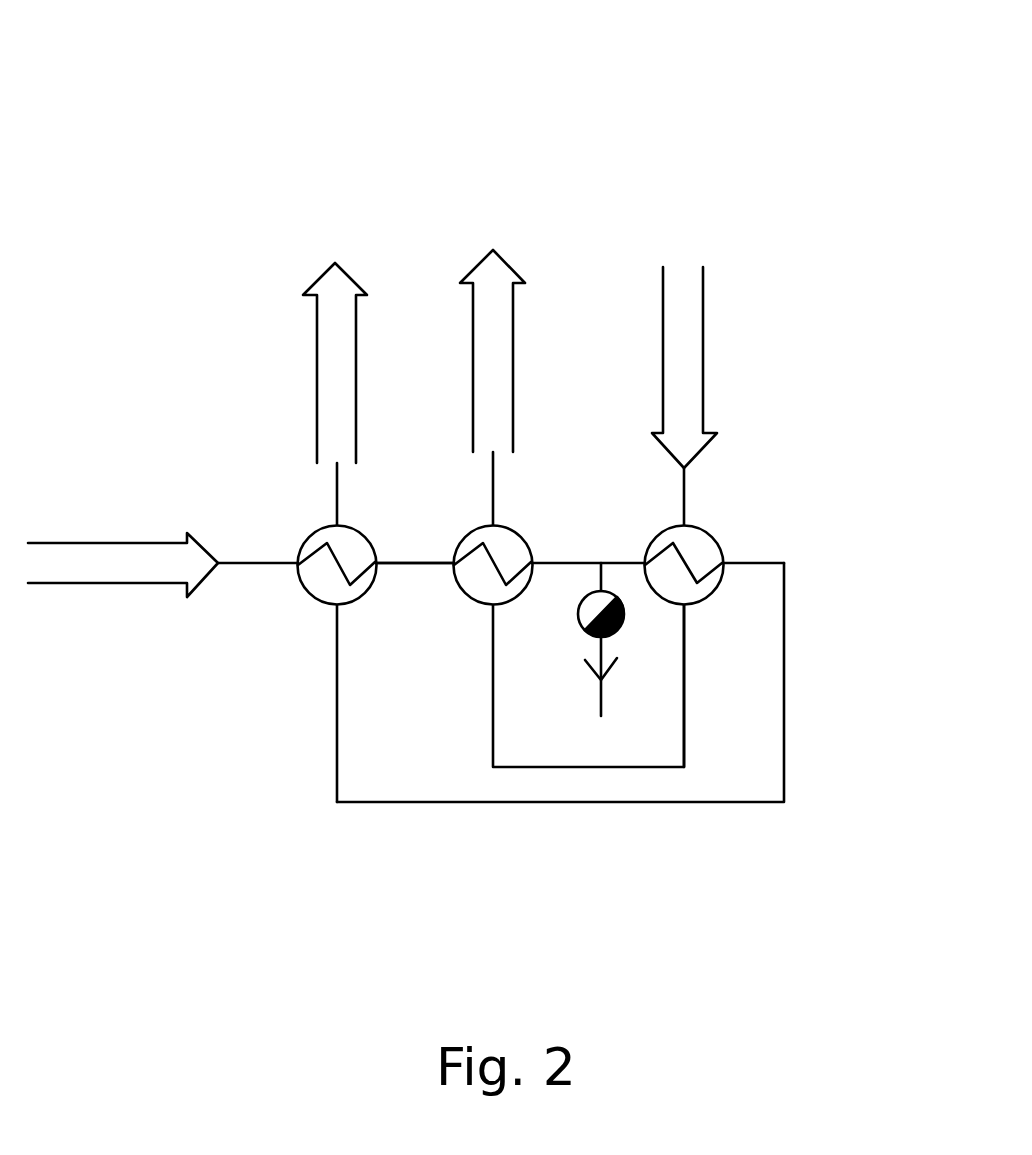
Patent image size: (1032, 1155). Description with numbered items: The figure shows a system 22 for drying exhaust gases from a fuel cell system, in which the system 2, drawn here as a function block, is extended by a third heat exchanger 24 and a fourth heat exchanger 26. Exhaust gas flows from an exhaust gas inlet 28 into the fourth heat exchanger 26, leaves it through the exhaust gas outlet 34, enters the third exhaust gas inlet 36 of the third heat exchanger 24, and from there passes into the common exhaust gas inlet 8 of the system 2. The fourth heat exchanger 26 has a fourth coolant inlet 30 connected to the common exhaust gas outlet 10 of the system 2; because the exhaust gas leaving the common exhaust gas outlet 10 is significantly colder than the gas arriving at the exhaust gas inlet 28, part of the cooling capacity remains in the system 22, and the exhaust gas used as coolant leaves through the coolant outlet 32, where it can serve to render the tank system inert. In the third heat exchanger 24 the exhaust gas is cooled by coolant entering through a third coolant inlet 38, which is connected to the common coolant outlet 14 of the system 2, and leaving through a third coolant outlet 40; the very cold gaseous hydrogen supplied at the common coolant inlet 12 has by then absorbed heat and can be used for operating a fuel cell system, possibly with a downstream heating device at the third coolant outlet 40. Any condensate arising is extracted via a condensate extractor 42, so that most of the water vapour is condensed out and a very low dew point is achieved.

The system 22 is at (572, 122).
The exhaust gas inlet 28 is at (247, 563).
The fourth heat exchanger 26 is at (318, 586).
The fourth coolant inlet 30 is at (337, 612).
The coolant outlet 32 is at (337, 507).
The exhaust gas outlet 34 is at (395, 562).
The third exhaust gas inlet 36 is at (432, 563).
The third coolant outlet 40 is at (495, 504).
The third heat exchanger 24 is at (480, 586).
The third coolant inlet 38 is at (493, 630).
The common exhaust gas inlet 8 is at (622, 563).
The condensate extractor 42 is at (615, 632).
The common coolant outlet 14 is at (687, 627).
The system according to the invention 2 is at (720, 537).
The common coolant inlet 12 is at (687, 485).
The common exhaust gas outlet 10 is at (772, 563).